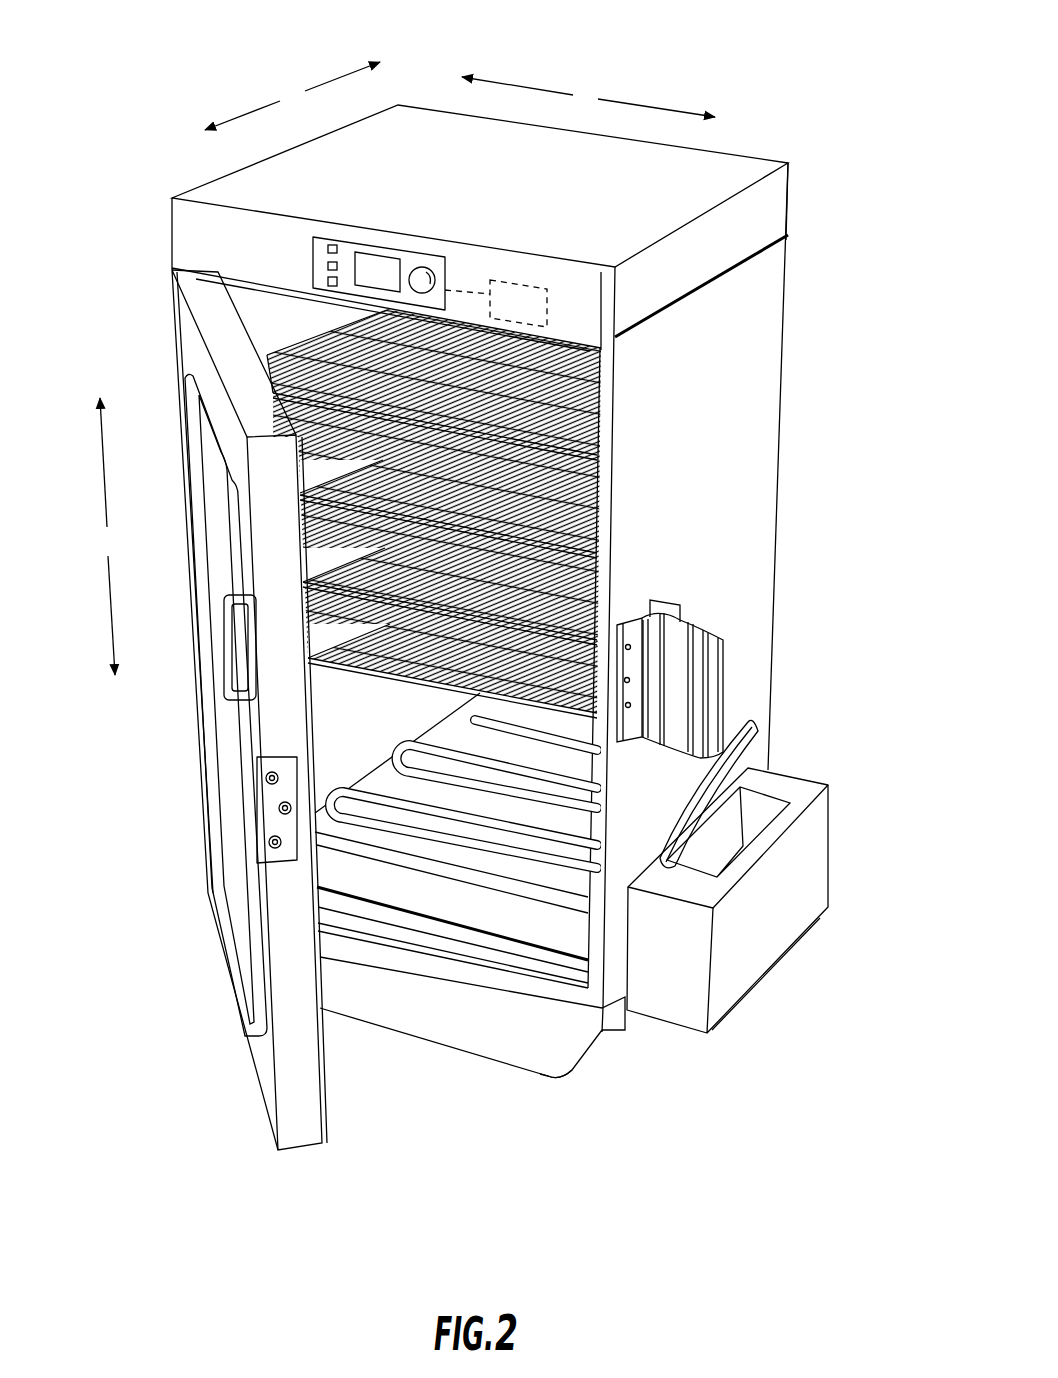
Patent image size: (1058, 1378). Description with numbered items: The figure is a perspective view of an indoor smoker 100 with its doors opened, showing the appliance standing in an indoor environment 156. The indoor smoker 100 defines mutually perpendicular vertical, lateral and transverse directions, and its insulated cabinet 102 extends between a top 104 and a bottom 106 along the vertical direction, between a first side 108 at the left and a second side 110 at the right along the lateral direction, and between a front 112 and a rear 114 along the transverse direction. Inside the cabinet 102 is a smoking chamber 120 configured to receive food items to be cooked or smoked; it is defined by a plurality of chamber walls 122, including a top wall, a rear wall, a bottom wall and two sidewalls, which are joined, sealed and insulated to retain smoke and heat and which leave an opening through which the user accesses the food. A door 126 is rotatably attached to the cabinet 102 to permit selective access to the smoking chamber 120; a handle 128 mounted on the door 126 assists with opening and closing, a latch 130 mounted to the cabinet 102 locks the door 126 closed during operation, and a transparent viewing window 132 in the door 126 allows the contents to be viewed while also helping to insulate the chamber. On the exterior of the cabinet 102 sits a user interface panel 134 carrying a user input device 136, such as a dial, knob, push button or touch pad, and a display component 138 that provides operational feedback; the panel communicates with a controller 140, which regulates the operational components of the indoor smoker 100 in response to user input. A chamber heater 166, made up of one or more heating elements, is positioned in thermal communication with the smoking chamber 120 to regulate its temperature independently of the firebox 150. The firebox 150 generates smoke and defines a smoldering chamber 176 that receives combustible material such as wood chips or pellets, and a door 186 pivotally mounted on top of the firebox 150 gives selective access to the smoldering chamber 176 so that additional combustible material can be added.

The indoor smoker 100 is at (790, 52).
The insulated cabinet 102 is at (752, 375).
The top 104 is at (713, 160).
The bottom 106 is at (492, 1063).
The first side 108 is at (172, 242).
The second side 110 is at (762, 535).
The front 112 is at (215, 237).
The rear 114 is at (793, 272).
The smoking chamber 120 is at (486, 921).
The chamber walls 122 is at (253, 315).
The door 126 is at (210, 323).
The handle 128 is at (233, 626).
The latch 130 is at (715, 662).
The transparent viewing window 132 is at (258, 797).
The user interface panel 134 is at (400, 225).
The user input device 136 is at (332, 248).
The display component 138 is at (390, 268).
The controller 140 is at (520, 280).
The firebox 150 is at (755, 945).
The indoor environment 156 is at (133, 105).
The chamber heater 166 is at (560, 1078).
The smoldering chamber 176 is at (718, 985).
The door 186 is at (725, 760).